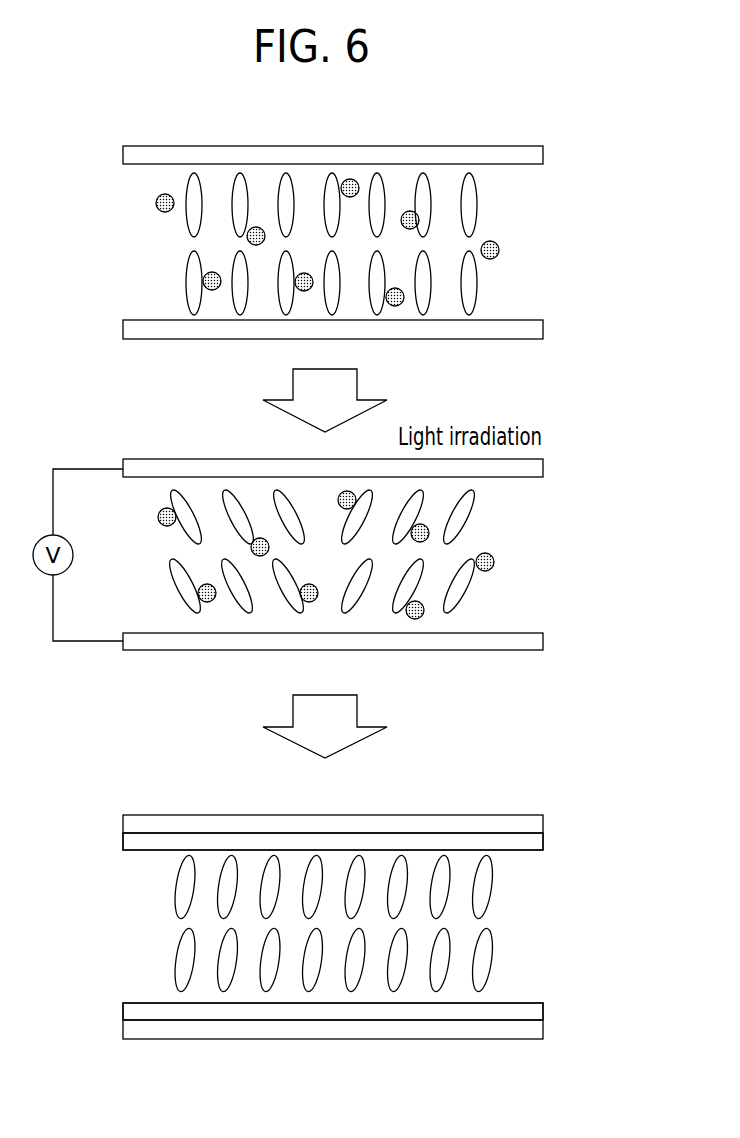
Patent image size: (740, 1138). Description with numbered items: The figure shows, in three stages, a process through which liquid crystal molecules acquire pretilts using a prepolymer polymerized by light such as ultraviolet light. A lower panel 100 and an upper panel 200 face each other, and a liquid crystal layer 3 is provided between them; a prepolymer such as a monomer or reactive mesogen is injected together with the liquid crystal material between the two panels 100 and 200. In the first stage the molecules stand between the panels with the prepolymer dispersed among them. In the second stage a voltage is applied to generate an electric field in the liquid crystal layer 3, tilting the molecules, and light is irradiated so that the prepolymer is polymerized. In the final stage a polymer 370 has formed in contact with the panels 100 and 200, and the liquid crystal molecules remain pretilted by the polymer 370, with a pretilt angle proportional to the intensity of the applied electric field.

The upper panel 200 is at (123, 153).
The lower panel 100 is at (123, 327).
The liquid crystal layer 3 is at (112, 165).
The polymer 370 is at (543, 840).